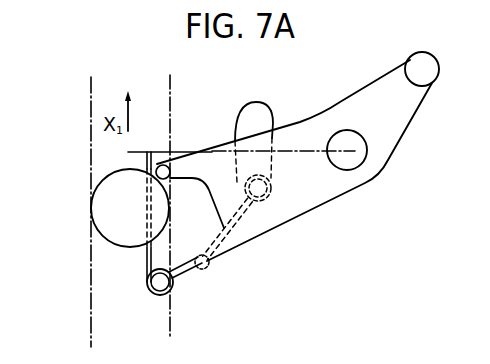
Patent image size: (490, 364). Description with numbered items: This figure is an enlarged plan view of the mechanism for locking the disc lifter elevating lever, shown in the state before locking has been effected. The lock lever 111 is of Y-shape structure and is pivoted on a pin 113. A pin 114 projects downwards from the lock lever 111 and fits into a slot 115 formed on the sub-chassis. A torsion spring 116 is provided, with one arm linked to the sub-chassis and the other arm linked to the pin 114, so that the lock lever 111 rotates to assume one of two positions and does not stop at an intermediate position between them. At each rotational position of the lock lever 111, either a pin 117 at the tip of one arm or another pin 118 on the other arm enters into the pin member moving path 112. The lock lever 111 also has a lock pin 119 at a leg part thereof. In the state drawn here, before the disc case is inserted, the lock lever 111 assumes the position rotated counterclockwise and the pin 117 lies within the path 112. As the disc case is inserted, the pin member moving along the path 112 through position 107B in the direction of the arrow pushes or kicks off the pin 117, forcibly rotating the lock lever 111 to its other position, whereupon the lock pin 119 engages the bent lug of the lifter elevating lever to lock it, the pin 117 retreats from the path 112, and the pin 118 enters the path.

The pin member position 107B is at (94, 209).
The lock lever 111 is at (337, 112).
The pin member moving path 112 is at (94, 279).
The pin 113 is at (366, 157).
The pin 114 is at (272, 190).
The slot 115 is at (249, 113).
The torsion spring 116 is at (188, 280).
The pin 117 is at (160, 165).
The pin 118 is at (208, 268).
The lock pin 119 is at (429, 76).